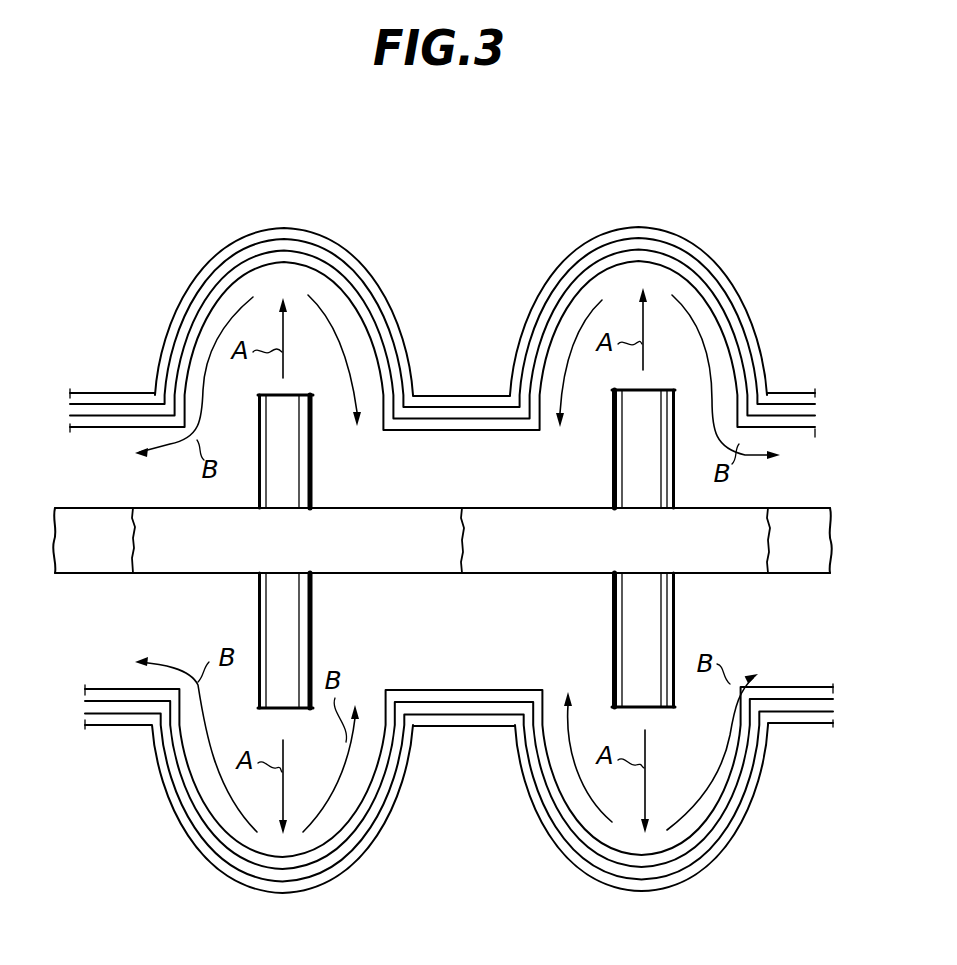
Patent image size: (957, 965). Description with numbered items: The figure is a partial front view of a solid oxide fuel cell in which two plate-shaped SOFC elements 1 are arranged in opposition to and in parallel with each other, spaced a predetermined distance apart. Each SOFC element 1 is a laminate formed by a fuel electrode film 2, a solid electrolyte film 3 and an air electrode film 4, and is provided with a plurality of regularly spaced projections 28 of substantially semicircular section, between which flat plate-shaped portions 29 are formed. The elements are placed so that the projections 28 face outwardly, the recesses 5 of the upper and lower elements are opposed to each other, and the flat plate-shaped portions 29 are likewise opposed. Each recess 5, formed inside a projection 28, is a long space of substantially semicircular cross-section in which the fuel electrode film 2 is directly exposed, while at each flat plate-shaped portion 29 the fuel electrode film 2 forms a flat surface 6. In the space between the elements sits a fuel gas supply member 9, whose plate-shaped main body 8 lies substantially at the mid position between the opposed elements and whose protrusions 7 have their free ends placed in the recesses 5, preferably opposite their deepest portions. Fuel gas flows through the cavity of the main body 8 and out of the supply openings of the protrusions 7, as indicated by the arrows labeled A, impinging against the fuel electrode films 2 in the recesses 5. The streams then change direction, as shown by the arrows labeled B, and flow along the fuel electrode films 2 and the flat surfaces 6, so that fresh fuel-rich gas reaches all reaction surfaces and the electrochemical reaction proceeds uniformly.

The SOFC element 1 is at (472, 560).
The fuel electrode film 2 is at (811, 430).
The solid electrolyte film 3 is at (810, 412).
The air electrode film 4 is at (799, 397).
The recess 5 is at (330, 293).
The flat surface 6 is at (484, 425).
The protrusion 7 is at (298, 473).
The plate-shaped main body 8 is at (820, 545).
The fuel gas supply member 9 is at (834, 481).
The projection 28 is at (298, 256).
The flat plate-shaped portion 29 is at (433, 414).